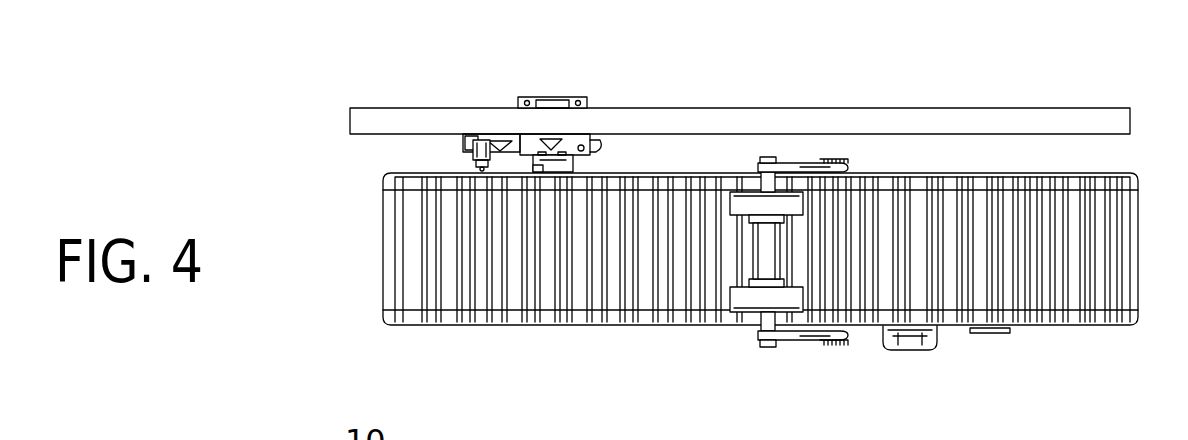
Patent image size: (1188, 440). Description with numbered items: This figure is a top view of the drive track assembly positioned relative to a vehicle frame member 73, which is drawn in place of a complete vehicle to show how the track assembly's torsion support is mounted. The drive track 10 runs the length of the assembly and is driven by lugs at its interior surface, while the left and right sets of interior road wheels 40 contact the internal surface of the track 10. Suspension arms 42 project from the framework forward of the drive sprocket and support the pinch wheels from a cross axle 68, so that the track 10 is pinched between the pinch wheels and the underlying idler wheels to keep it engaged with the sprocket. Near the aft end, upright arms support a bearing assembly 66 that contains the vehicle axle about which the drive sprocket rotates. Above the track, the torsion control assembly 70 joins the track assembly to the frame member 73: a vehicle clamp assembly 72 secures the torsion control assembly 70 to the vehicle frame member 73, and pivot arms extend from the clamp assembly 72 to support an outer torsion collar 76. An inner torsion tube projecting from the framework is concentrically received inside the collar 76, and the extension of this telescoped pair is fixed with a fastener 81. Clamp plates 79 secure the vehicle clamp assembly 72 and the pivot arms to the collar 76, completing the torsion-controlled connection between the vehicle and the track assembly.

The drive track 10 is at (392, 247).
The interior road wheels 40 is at (732, 300).
The suspension arms 42 is at (802, 164).
The bearing assembly 66 is at (908, 349).
The cross axle 68 is at (768, 250).
The torsion control assembly 70 is at (560, 98).
The vehicle clamp assembly 72 is at (482, 152).
The vehicle frame member 73 is at (363, 114).
The outer torsion collar 76 is at (552, 166).
The clamp plates 79 is at (575, 138).
The fastener 81 is at (535, 164).